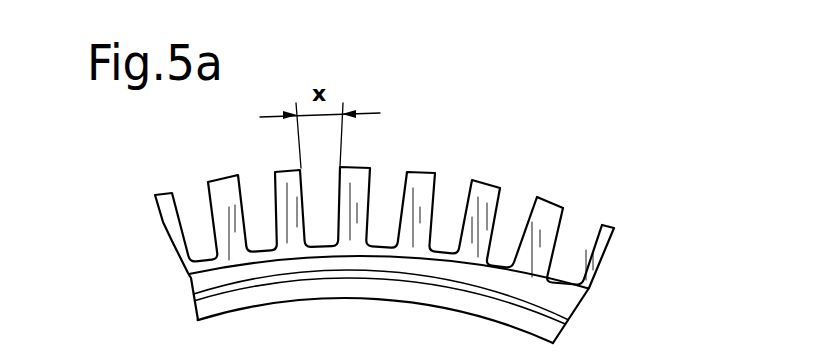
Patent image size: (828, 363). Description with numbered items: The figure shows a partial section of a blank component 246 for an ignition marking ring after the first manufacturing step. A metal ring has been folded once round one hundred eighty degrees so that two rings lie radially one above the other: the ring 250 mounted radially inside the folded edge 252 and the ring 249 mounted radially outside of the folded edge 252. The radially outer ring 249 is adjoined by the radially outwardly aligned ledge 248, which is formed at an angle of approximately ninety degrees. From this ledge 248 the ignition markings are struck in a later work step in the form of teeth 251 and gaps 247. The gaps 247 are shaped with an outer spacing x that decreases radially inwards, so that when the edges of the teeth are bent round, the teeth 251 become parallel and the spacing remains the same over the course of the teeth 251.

The blank component 246 is at (563, 163).
The gaps 247 is at (580, 225).
The ledge 248 is at (613, 250).
The radially outer ring 249 is at (570, 310).
The radially inner ring 250 is at (360, 290).
The teeth 251 is at (547, 215).
The folded edge 252 is at (207, 295).